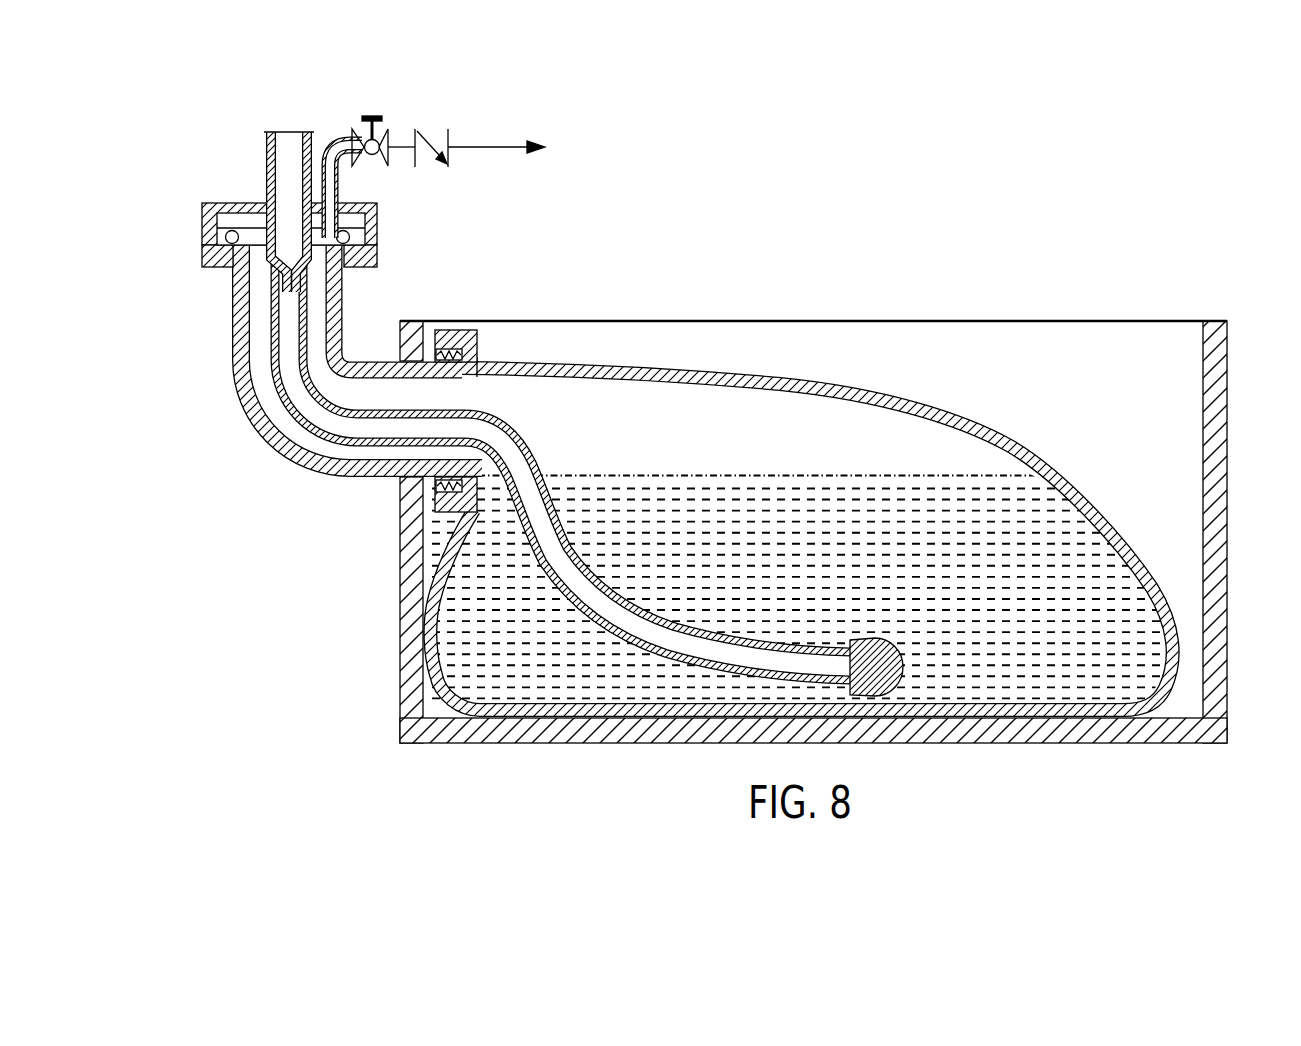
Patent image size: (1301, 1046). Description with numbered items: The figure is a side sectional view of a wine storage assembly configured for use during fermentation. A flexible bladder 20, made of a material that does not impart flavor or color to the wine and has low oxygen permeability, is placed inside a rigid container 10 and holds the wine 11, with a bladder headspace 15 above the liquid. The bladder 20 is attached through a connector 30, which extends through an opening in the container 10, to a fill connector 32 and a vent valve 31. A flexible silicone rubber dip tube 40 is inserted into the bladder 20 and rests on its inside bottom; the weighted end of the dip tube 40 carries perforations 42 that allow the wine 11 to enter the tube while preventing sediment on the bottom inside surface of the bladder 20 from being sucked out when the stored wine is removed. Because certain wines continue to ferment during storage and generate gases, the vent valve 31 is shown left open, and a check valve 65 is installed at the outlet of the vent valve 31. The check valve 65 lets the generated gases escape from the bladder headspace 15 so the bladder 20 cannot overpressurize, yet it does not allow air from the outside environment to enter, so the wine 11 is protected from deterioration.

The rigid container 10 is at (1227, 462).
The wine 11 is at (907, 513).
The bladder headspace 15 is at (592, 455).
The bladder 20 is at (710, 372).
The connector 30 is at (232, 336).
The vent valve 31 is at (375, 114).
The fill connector 32 is at (262, 182).
The dip tube 40 is at (620, 632).
The perforations 42 is at (898, 670).
The check valve 65 is at (449, 160).